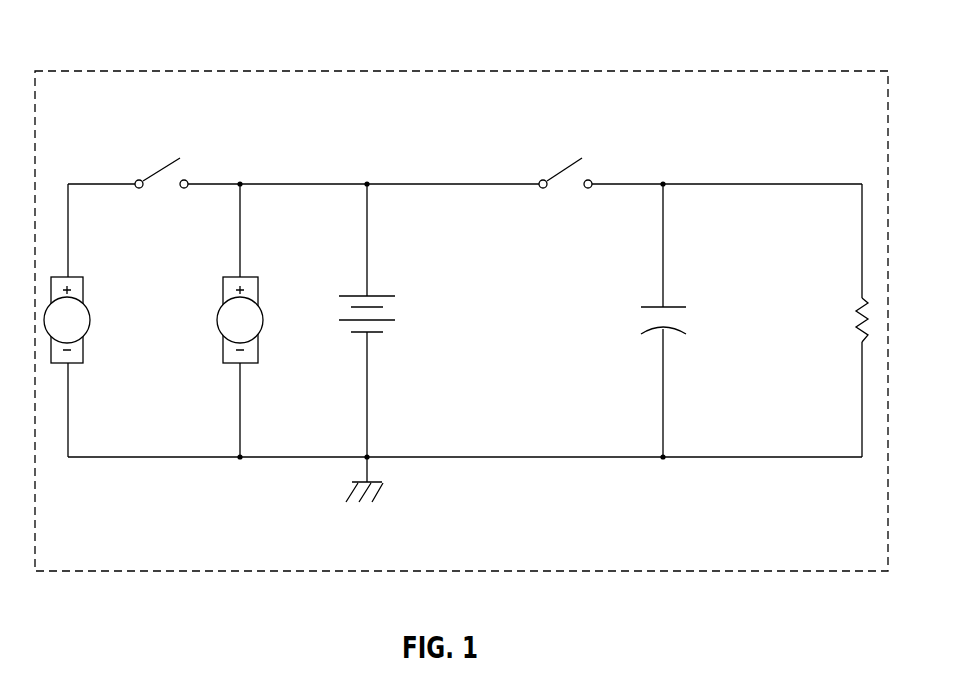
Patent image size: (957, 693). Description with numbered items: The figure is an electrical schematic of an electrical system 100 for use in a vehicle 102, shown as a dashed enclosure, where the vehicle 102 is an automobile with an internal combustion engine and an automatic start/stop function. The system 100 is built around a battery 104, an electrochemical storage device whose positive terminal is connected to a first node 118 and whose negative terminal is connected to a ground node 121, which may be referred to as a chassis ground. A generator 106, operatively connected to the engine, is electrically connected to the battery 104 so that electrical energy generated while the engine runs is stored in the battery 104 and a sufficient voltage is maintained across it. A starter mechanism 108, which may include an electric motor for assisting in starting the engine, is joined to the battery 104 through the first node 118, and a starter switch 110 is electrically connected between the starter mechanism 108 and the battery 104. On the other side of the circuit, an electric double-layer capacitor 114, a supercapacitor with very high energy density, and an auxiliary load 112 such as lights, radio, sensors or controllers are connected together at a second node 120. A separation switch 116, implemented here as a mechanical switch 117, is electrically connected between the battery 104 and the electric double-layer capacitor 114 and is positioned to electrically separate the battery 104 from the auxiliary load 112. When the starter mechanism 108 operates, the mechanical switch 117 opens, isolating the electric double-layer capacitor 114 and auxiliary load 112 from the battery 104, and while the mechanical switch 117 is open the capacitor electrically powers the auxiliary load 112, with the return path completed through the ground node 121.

The electrical system 100 is at (800, 138).
The vehicle 102 is at (83, 69).
The battery 104 is at (380, 295).
The generator 106 is at (217, 320).
The starter mechanism 108 is at (90, 320).
The starter switch 110 is at (161, 168).
The auxiliary load 112 is at (856, 318).
The electric double-layer capacitor 114 is at (676, 306).
The separation switch 116 is at (595, 158).
The mechanical switch 117 is at (568, 168).
The first node 118 is at (307, 183).
The second node 120 is at (727, 183).
The ground node 121 is at (480, 458).